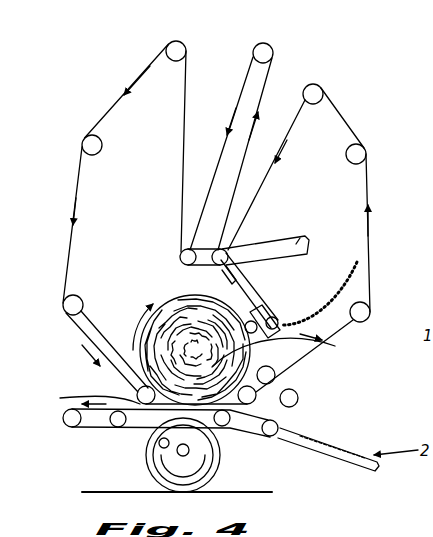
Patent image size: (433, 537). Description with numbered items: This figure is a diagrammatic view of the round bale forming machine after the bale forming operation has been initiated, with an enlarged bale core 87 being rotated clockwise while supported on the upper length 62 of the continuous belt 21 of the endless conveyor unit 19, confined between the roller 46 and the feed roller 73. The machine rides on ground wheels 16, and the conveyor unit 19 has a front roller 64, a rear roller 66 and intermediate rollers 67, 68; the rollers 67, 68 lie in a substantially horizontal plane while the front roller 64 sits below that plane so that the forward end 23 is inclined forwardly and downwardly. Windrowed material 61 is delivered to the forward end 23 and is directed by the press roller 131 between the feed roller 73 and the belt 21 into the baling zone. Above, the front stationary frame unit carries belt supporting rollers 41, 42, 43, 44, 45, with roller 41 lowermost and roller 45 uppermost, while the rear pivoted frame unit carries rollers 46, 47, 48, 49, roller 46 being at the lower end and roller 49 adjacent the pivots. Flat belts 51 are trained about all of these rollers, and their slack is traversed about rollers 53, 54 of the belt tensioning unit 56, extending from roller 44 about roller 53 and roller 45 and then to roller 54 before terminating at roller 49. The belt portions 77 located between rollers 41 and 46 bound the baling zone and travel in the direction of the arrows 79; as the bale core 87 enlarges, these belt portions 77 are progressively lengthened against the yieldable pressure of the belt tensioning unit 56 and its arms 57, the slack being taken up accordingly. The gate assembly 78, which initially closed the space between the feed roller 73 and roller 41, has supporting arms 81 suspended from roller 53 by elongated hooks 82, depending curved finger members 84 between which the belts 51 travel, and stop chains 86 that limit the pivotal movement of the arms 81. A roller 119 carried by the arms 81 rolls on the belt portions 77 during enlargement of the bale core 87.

The ground wheels 16 is at (160, 478).
The endless conveyor unit 19 is at (93, 436).
The continuous belt 21 is at (112, 426).
The forward end of the conveyor unit 23 is at (305, 428).
The belt supporting roller 41 is at (275, 375).
The belt supporting roller 42 is at (370, 312).
The belt supporting roller 43 is at (365, 152).
The belt supporting roller 44 is at (320, 90).
The belt supporting roller 45 is at (268, 47).
The roller 46 is at (135, 395).
The roller 47 is at (64, 305).
The roller 48 is at (84, 143).
The roller 49 is at (171, 43).
The flat belts 51 is at (66, 258).
The roller 53 is at (235, 245).
The roller 54 is at (180, 258).
The belt tensioning unit 56 is at (306, 234).
The arms 57 is at (292, 252).
The windrowed material 61 is at (340, 443).
The upper length of the belt conveyor 62 is at (75, 403).
The front roller 64 is at (272, 436).
The rear roller 66 is at (66, 423).
The intermediate roller 67 is at (225, 430).
The intermediate roller 68 is at (123, 428).
The feed roller 73 is at (256, 395).
The belt portions 77 is at (152, 302).
The gate assembly 78 is at (270, 308).
The arrows 79 is at (137, 332).
The supporting arms 81 is at (256, 282).
The elongated hooks 82 is at (224, 266).
The curved finger members 84 is at (328, 346).
The stop chains 86 is at (346, 292).
The bale core 87 is at (195, 350).
The roller 119 is at (302, 360).
The press roller 131 is at (298, 400).